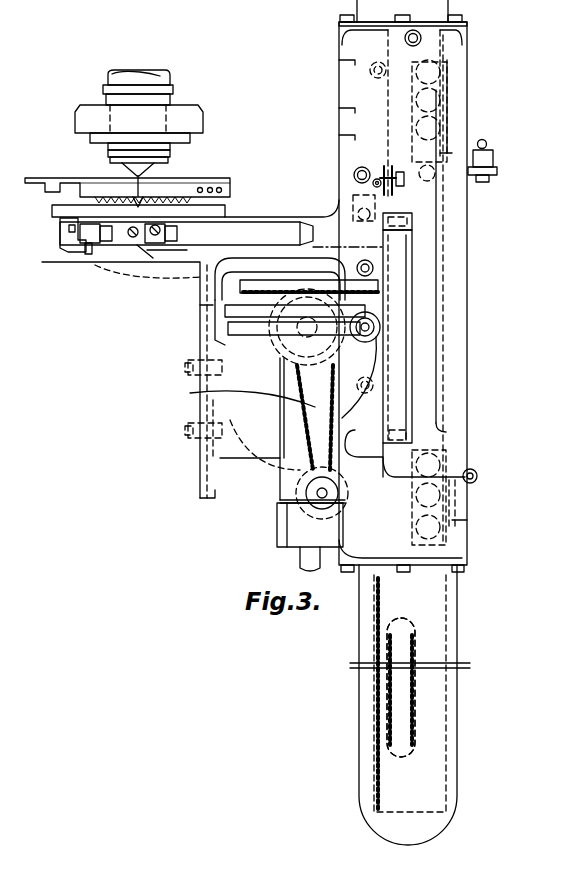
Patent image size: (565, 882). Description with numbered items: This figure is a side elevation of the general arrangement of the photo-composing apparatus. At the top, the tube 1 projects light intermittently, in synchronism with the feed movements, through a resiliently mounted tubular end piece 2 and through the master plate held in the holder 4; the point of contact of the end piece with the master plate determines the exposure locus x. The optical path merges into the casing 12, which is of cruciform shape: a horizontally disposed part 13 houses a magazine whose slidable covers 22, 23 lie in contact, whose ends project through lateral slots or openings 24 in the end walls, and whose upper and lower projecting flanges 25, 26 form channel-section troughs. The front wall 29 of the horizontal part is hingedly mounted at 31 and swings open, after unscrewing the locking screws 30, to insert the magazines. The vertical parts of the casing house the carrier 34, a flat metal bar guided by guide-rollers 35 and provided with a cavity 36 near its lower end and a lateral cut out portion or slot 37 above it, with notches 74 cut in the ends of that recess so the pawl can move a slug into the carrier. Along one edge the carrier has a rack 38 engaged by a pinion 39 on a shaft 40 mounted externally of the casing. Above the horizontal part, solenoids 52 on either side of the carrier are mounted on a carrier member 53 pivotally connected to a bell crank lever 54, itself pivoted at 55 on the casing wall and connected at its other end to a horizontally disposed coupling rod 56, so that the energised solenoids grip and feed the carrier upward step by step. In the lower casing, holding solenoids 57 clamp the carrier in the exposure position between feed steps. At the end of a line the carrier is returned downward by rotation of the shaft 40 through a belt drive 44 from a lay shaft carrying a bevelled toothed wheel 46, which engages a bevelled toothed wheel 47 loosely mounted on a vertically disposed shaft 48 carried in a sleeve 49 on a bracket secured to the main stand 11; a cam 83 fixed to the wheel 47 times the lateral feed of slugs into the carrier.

The tube 1 is at (158, 81).
The tubular end piece 2 is at (150, 180).
The holder 4 is at (180, 188).
The exposure locus x is at (135, 183).
The coupling rod 56 is at (235, 234).
The casing 12 is at (332, 212).
The bell crank lever 54 is at (384, 170).
The pivot 55 is at (356, 172).
The guide-rollers 35 is at (390, 62).
The solenoids 52 is at (430, 108).
The locking screws 30 is at (484, 147).
The carrier member 53 is at (395, 162).
The projecting flange 25 is at (412, 222).
The horizontally disposed part 13 is at (422, 263).
The cam 83 is at (345, 310).
The front wall 29 is at (455, 318).
The lateral slots or openings 24 is at (415, 377).
The lateral cut out portion or slot 37 is at (412, 405).
The projecting flange 26 is at (345, 433).
The hinge 31 is at (477, 479).
The holding solenoids 57 is at (455, 520).
The main stand 11 is at (193, 378).
The bevelled toothed wheel 47 is at (237, 305).
The bevelled toothed wheel 46 is at (224, 328).
The sleeve 49 is at (230, 395).
The belt drive 44 is at (186, 431).
The notches 74 is at (290, 440).
The shaft 40 is at (283, 496).
The pinion 39 is at (300, 512).
The vertically disposed shaft 48 is at (300, 560).
The carrier 34 is at (420, 752).
The rack 38 is at (378, 685).
The cavity 36 is at (415, 627).
The slidable cover 22 is at (398, 724).
The slidable cover 23 is at (401, 687).